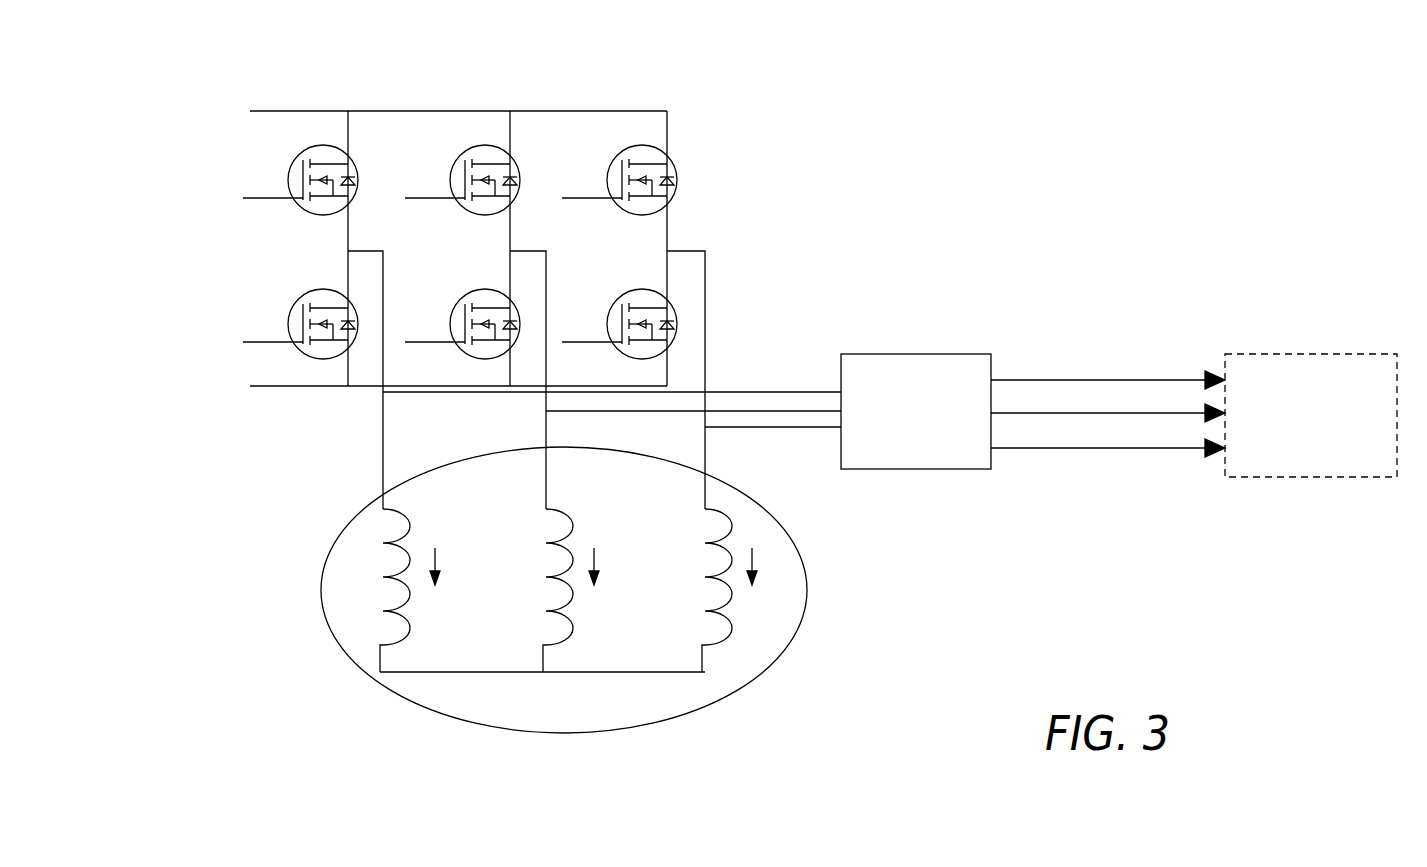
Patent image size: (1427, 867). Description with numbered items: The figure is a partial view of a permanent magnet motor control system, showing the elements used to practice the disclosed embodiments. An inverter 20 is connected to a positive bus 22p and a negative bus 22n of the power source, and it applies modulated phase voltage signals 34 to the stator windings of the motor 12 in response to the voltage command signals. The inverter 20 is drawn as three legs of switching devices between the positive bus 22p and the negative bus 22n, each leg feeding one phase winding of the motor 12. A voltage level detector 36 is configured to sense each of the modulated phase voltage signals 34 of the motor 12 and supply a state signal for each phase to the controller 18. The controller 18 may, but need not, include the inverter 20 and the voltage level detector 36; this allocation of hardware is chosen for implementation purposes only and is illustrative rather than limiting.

The motor 12 is at (560, 590).
The controller 18 is at (1301, 451).
The inverter 20 is at (503, 225).
The positive bus 22p is at (440, 99).
The negative bus 22n is at (418, 369).
The modulated phase voltage signals 34 is at (570, 380).
The voltage level detector 36 is at (1024, 430).